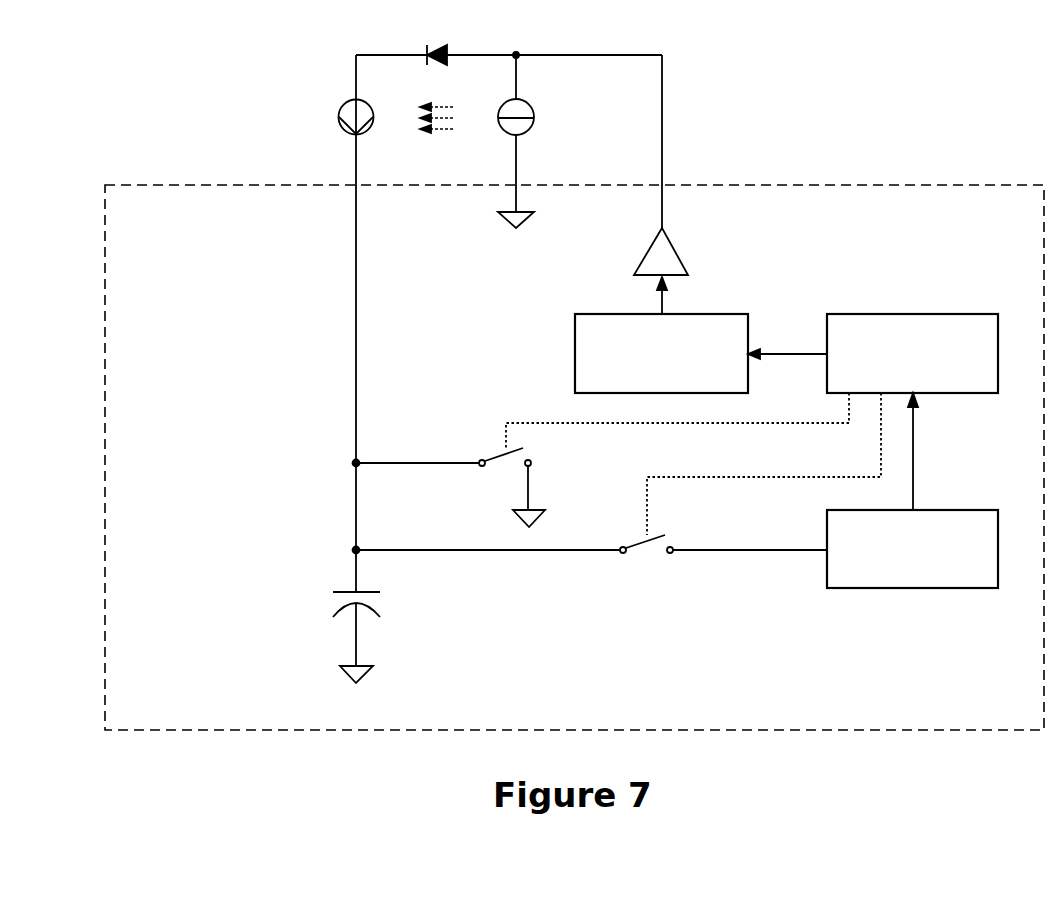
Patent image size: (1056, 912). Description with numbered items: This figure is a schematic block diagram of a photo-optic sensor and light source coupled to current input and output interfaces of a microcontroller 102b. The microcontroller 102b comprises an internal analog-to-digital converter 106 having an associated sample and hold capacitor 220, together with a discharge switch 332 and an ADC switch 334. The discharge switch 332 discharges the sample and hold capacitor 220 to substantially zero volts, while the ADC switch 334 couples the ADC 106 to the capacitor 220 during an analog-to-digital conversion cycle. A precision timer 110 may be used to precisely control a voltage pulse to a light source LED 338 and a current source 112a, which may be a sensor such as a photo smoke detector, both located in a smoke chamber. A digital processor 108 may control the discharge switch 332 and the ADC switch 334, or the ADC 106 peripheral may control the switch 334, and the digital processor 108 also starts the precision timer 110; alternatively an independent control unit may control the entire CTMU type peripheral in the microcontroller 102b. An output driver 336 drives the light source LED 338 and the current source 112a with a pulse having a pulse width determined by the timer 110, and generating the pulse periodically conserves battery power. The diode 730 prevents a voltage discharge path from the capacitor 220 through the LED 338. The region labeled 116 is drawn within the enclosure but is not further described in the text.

The microcontroller 102b is at (990, 184).
The current source 112a is at (342, 102).
The diode 730 is at (448, 60).
The light source light emitting diode (LED) 338 is at (528, 108).
The output driver 336 is at (677, 257).
The precision timer 110 is at (707, 312).
The digital processor 108 is at (964, 313).
The analog-to-digital converter (ADC) 106 is at (951, 509).
The discharge switch 332 is at (500, 454).
The ADC switch 334 is at (645, 548).
The sample and hold (S/H) capacitor 220 is at (379, 600).
The sensor circuit 116 is at (529, 696).